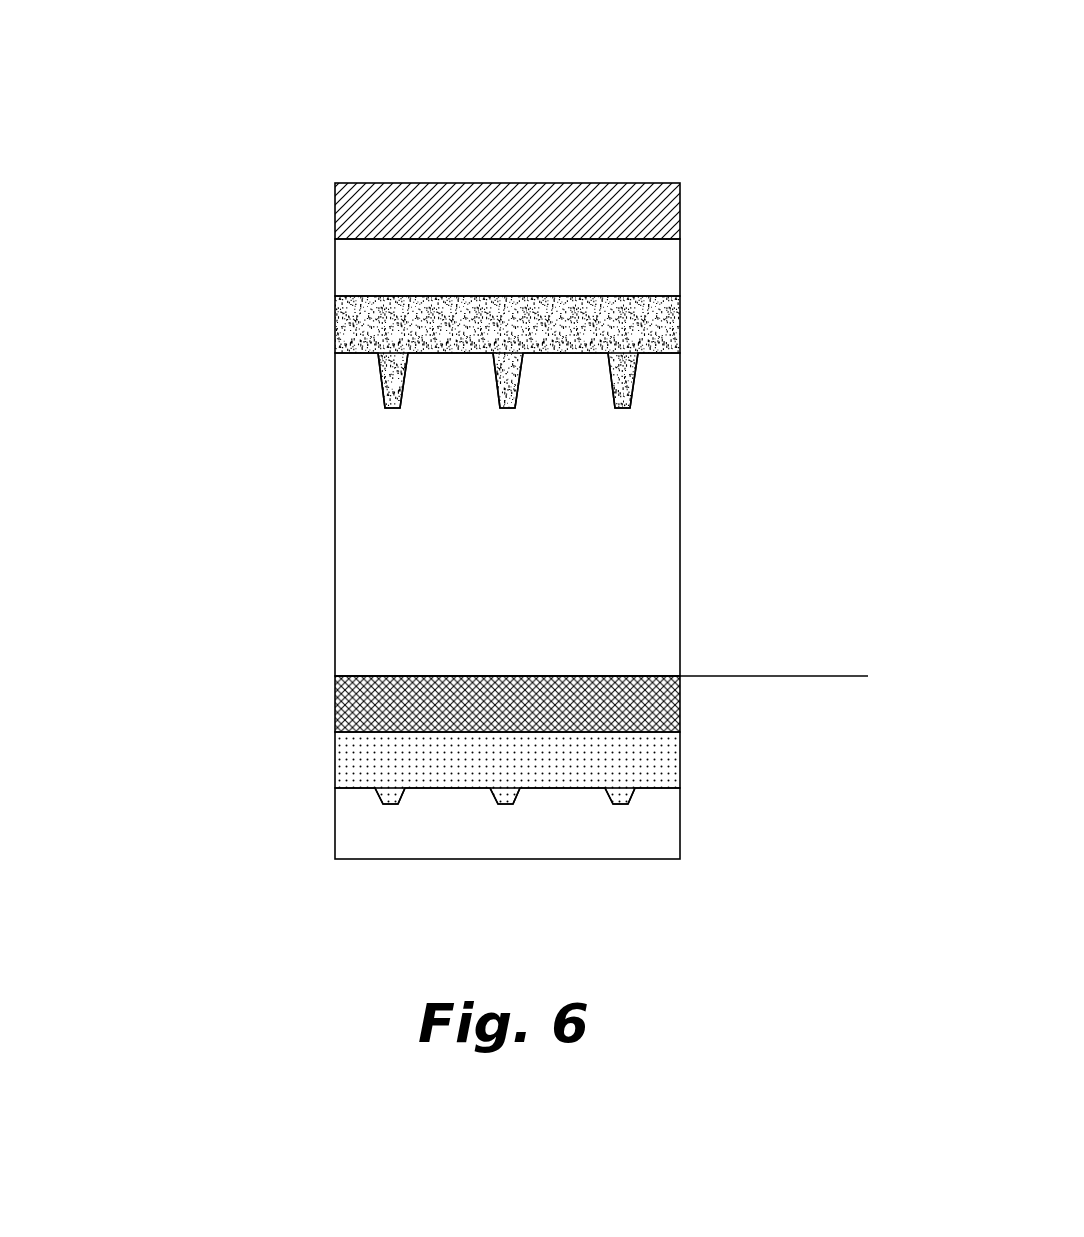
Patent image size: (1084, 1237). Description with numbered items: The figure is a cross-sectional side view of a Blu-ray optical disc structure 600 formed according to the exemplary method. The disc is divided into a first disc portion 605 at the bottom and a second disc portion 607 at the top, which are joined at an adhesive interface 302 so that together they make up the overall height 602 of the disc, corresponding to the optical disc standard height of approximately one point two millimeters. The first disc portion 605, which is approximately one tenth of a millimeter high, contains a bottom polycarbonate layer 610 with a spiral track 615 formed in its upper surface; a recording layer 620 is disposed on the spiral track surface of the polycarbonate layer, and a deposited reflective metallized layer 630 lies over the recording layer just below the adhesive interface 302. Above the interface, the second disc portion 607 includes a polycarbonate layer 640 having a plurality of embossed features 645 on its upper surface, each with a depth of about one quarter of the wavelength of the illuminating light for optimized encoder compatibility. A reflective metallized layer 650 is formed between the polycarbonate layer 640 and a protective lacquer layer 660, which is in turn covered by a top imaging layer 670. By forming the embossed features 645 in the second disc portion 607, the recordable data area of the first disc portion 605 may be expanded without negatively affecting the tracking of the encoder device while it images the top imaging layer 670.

The Blu-ray optical disc structure 600 is at (502, 429).
The overall height 602 is at (447, 521).
The second disc portion 607 is at (515, 429).
The first disc portion 605 is at (512, 767).
The top imaging layer 670 is at (680, 213).
The protective lacquer layer 660 is at (680, 263).
The reflective metallized layer 650 is at (680, 313).
The embossed features 645 is at (680, 355).
The polycarbonate layer 640 is at (680, 515).
The adhesive interface 302 is at (629, 676).
The reflective metallized layer 630 is at (680, 707).
The recording layer 620 is at (680, 770).
The spiral track 615 is at (680, 790).
The bottom polycarbonate layer 610 is at (680, 833).